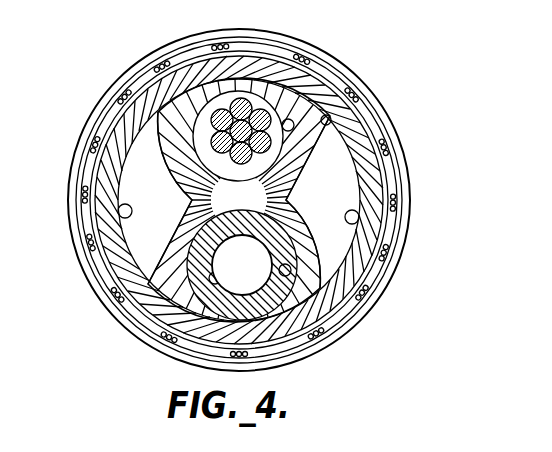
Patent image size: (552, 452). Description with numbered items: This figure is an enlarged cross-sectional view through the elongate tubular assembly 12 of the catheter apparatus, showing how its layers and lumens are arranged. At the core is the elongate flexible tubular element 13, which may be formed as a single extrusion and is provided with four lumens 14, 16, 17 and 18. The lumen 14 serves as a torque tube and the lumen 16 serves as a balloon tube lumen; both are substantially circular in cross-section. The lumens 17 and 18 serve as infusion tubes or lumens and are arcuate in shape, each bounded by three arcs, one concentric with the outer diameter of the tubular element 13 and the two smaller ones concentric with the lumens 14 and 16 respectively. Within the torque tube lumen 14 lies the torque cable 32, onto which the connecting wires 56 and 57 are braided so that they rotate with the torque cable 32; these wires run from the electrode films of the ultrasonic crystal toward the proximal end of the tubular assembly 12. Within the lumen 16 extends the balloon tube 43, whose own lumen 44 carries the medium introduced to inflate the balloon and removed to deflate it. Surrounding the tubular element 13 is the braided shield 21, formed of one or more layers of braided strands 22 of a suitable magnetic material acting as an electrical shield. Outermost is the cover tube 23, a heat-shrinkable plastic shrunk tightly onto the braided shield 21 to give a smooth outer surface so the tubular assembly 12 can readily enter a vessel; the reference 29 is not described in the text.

The elongate tubular assembly 12 is at (463, 64).
The elongate flexible tubular element 13 is at (392, 168).
The lumen 14 is at (352, 110).
The lumen 16 is at (265, 278).
The lumen 17 is at (360, 219).
The lumen 18 is at (122, 205).
The braided shield 21 is at (100, 314).
The braided strands 22 is at (108, 291).
The cover tube 23 is at (120, 334).
The cable portion 29 is at (23, 22).
The torque cable 32 is at (277, 98).
The balloon tube 43 is at (285, 292).
The lumen 44 is at (182, 332).
The connecting wire 56 is at (240, 100).
The connecting wire 57 is at (180, 181).